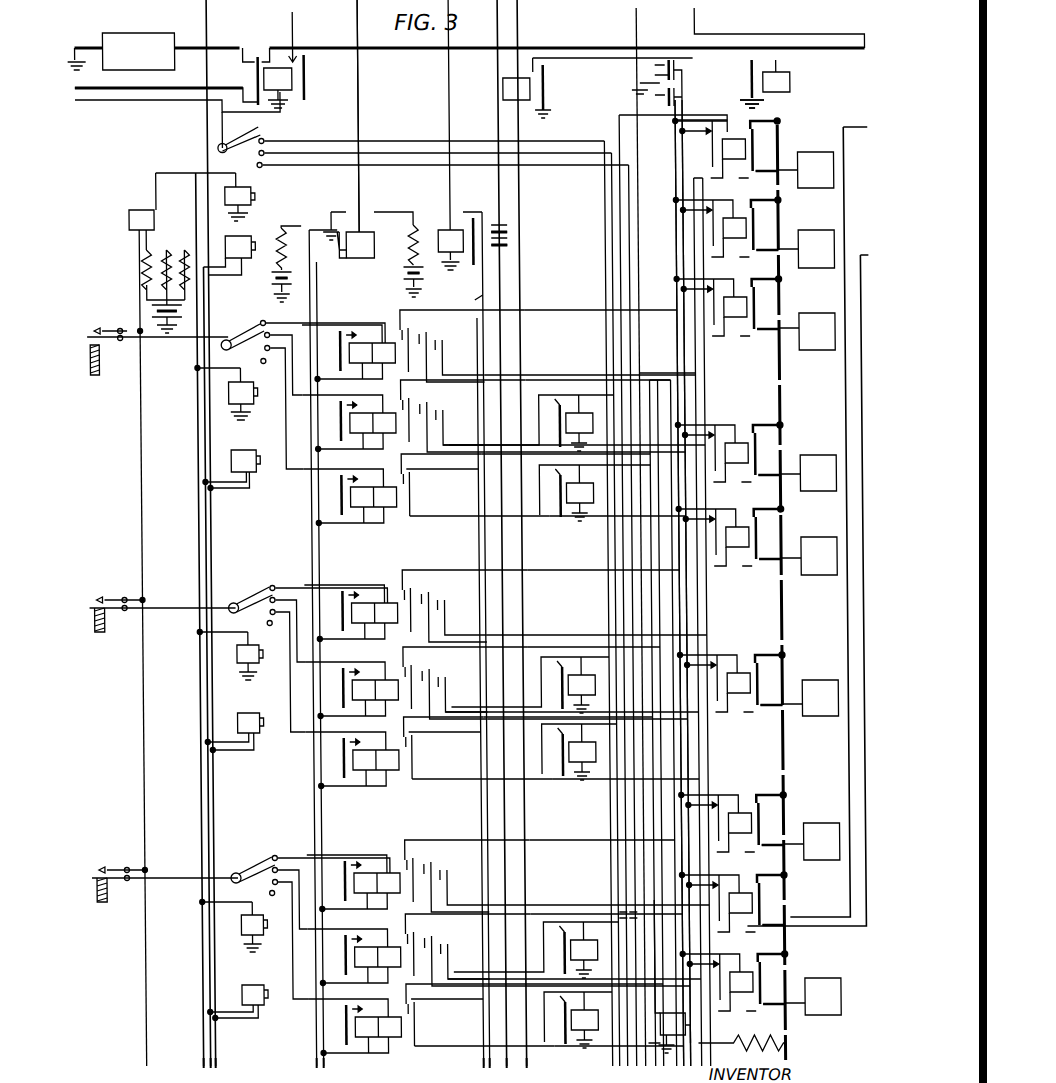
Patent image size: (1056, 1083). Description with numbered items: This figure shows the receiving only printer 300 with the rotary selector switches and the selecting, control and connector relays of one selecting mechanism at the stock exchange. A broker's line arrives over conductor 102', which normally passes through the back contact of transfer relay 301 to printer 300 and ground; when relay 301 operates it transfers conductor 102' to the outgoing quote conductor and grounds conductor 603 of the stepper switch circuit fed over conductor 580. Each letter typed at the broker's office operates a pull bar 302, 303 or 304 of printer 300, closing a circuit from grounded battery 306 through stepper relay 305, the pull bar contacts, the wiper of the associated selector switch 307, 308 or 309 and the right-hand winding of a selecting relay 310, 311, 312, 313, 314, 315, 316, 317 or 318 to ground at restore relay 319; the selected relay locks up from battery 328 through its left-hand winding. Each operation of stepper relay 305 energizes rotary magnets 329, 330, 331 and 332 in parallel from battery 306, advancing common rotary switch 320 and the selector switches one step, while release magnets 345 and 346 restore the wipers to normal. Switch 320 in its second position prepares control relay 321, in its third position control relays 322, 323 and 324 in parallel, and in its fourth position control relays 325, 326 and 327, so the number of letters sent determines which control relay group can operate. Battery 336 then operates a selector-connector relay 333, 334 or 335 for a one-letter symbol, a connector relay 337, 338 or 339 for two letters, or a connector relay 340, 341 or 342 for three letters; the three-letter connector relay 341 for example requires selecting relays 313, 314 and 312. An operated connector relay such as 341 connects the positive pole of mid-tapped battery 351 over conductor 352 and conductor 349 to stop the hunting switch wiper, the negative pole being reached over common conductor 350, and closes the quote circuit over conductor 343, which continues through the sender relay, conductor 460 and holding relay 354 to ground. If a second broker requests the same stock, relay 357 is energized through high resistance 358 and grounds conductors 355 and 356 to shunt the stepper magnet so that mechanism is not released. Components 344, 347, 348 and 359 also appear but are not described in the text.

The receiving only printer 300 is at (176, 36).
The conductor 603 is at (293, 22).
The conductor 356 is at (636, 18).
The conductor 580 is at (795, 25).
The transfer relay 301 is at (292, 82).
The conductor 102' is at (174, 94).
The common rotary switch 320 is at (262, 145).
The holding relay 354 is at (503, 90).
The battery 351 is at (655, 75).
The conductor 460 is at (795, 75).
The conductor 355 is at (763, 100).
The stepper relay 305 is at (138, 210).
The rotary magnet 329 is at (250, 196).
The release magnet 345 is at (243, 240).
The control relay 321 is at (446, 230).
The battery 336 is at (508, 238).
The selector-connector relay 333 is at (722, 152).
The battery 328 is at (278, 270).
The restore relay 319 is at (358, 258).
The resistor battery 344 is at (420, 275).
The selector-connector relay 334 is at (722, 232).
The selector-connector relay 335 is at (722, 308).
The conductor 350 is at (682, 330).
The conductor 352 is at (675, 352).
The selector switch 307 is at (258, 336).
The selecting relay 310 is at (362, 343).
The battery 306 is at (172, 318).
The pull bar 302 is at (100, 370).
The rotary magnet 330 is at (226, 387).
The selecting relay 311 is at (362, 413).
The control relay 322 is at (583, 413).
The release magnet 346 is at (240, 450).
The selecting relay 312 is at (384, 507).
The control relay 325 is at (570, 505).
The connector relay 337 is at (740, 443).
The connector relay 338 is at (732, 547).
The selector switch 308 is at (258, 595).
The selecting relay 313 is at (362, 603).
The pull bar 303 is at (103, 630).
The rotary magnet 331 is at (240, 660).
The selecting relay 314 is at (362, 680).
The control relay 323 is at (572, 695).
The relay 347 is at (245, 748).
The selecting relay 315 is at (380, 770).
The control relay 326 is at (572, 762).
The connector relay 339 is at (734, 693).
The connector relay 340 is at (742, 813).
The conductor 343 is at (843, 780).
The selector switch 309 is at (260, 865).
The selecting relay 316 is at (362, 873).
The pull bar 304 is at (103, 898).
The selecting relay 317 is at (368, 947).
The control relay 324 is at (578, 940).
The BBA connector relay 341 is at (760, 898).
The rotary magnet 332 is at (240, 935).
The conductor 359 is at (647, 950).
The relay 357 is at (662, 1013).
The selecting relay 318 is at (385, 1037).
The relay 348 is at (248, 1010).
The connector relay 342 is at (745, 992).
The high resistance 358 is at (772, 1038).
The control relay 327 is at (572, 1030).
The conductor 349 is at (845, 930).